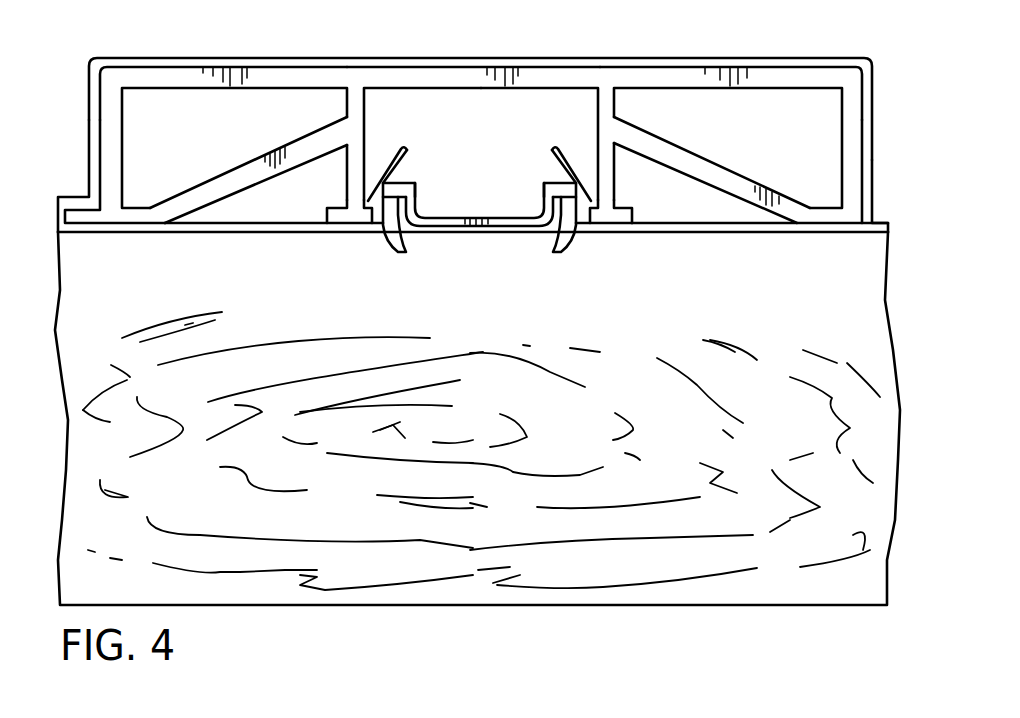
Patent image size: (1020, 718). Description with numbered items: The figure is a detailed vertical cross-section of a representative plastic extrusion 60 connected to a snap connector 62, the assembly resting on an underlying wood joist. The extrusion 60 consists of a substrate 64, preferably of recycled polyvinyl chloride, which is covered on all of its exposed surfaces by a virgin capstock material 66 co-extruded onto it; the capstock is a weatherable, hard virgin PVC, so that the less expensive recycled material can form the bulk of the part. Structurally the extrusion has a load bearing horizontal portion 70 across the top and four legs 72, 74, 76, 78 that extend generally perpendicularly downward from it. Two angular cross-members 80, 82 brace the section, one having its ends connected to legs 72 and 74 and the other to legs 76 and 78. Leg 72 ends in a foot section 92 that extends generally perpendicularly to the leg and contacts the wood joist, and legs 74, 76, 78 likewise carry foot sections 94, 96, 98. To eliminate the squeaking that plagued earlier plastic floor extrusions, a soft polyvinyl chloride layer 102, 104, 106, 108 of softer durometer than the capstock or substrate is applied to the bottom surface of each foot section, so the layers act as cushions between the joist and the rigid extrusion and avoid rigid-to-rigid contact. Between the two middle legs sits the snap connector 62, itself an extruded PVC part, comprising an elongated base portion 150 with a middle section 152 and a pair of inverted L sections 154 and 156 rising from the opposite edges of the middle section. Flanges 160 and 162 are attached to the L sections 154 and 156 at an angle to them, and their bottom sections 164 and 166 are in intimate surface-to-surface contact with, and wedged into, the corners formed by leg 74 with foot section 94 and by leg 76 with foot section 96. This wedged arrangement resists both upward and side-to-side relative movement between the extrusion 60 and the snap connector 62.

The extrusion 60 is at (743, 57).
The snap connector 62 is at (510, 234).
The substrate 64 is at (458, 78).
The virgin capstock material 66 is at (577, 57).
The load bearing horizontal portion 70 is at (268, 78).
The leg 72 is at (125, 133).
The leg 74 is at (366, 123).
The leg 76 is at (594, 123).
The leg 78 is at (840, 167).
The angular cross-member 80 is at (210, 183).
The angular cross-member 82 is at (730, 195).
The foot section 92 is at (87, 237).
The foot section 94 is at (333, 235).
The foot section 96 is at (598, 235).
The foot section 98 is at (823, 234).
The soft polyvinyl chloride layer 102 is at (127, 233).
The soft polyvinyl chloride layer 104 is at (353, 232).
The soft polyvinyl chloride layer 106 is at (617, 233).
The soft polyvinyl chloride layer 108 is at (862, 233).
The elongated base portion 150 is at (463, 210).
The middle section 152 is at (433, 216).
The inverted L section 154 is at (410, 182).
The inverted L section 156 is at (547, 183).
The flange 160 is at (388, 165).
The flange 162 is at (572, 165).
The bottom section 164 is at (398, 233).
The bottom section 166 is at (568, 233).